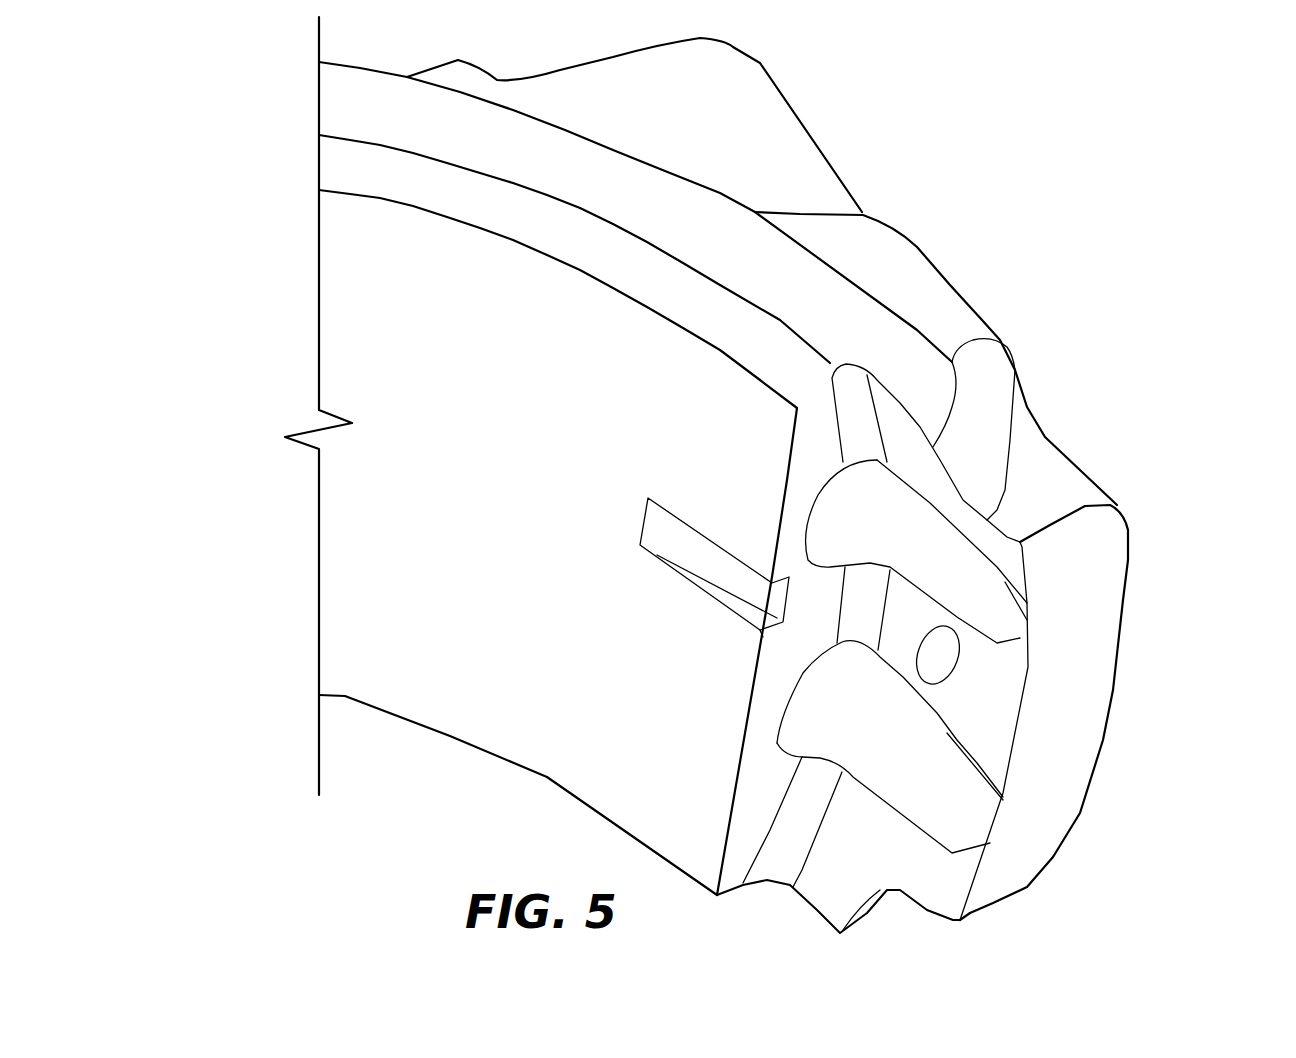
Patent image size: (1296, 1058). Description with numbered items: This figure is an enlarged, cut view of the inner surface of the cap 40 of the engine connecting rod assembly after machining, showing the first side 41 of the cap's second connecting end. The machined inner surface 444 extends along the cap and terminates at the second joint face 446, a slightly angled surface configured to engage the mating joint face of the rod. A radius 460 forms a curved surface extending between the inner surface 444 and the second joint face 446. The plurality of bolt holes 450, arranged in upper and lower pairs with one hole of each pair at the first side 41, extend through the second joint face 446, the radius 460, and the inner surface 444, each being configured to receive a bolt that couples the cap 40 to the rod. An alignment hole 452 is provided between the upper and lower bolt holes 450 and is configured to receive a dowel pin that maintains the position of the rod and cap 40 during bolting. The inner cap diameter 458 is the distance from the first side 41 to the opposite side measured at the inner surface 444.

The cap 40 is at (286, 157).
The first side 41 is at (862, 174).
The inner surface 444 is at (360, 347).
The second joint face 446 is at (813, 417).
The bolt holes 450 is at (867, 518).
The alignment hole 452 is at (950, 658).
The inner cap diameter 458 is at (945, 885).
The radius 460 is at (867, 597).